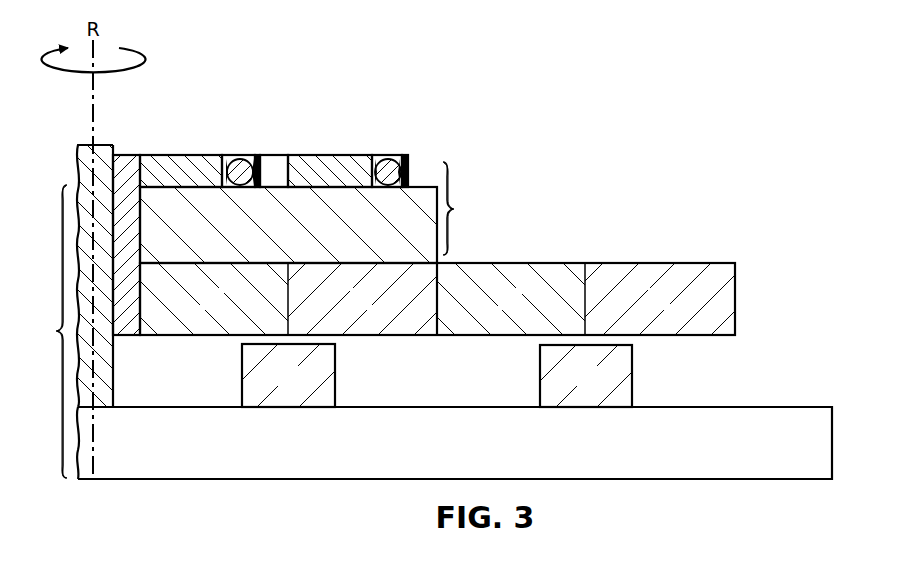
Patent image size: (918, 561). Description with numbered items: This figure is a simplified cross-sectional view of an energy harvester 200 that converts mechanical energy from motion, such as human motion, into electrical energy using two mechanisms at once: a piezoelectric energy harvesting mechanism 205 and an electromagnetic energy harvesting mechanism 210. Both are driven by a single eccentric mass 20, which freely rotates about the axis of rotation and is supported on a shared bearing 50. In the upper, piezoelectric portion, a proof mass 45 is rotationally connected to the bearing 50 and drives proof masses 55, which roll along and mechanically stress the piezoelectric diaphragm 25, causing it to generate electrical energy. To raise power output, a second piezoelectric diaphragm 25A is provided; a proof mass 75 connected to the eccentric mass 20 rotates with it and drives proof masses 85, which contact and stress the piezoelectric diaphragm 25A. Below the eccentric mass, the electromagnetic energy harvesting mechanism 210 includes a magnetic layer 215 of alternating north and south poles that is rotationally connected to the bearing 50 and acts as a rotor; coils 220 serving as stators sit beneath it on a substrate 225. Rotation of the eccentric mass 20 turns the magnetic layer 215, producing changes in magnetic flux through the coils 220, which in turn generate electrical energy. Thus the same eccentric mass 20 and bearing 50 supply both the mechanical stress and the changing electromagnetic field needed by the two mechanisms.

The eccentric mass 20 is at (276, 236).
The piezoelectric diaphragm 25 is at (258, 160).
The piezoelectric diaphragm 25A is at (410, 158).
The proof mass 45 is at (180, 163).
The bearing 50 is at (128, 162).
The proof masses 55 is at (246, 163).
The proof mass 75 is at (328, 162).
The proof masses 85 is at (395, 162).
The energy harvester 200 is at (726, 155).
The piezoelectric energy harvesting mechanism 205 is at (473, 208).
The electromagnetic energy harvesting mechanism 210 is at (38, 331).
The magnetic layer 215 is at (740, 298).
The coils 220 is at (243, 364).
The substrate 225 is at (440, 454).